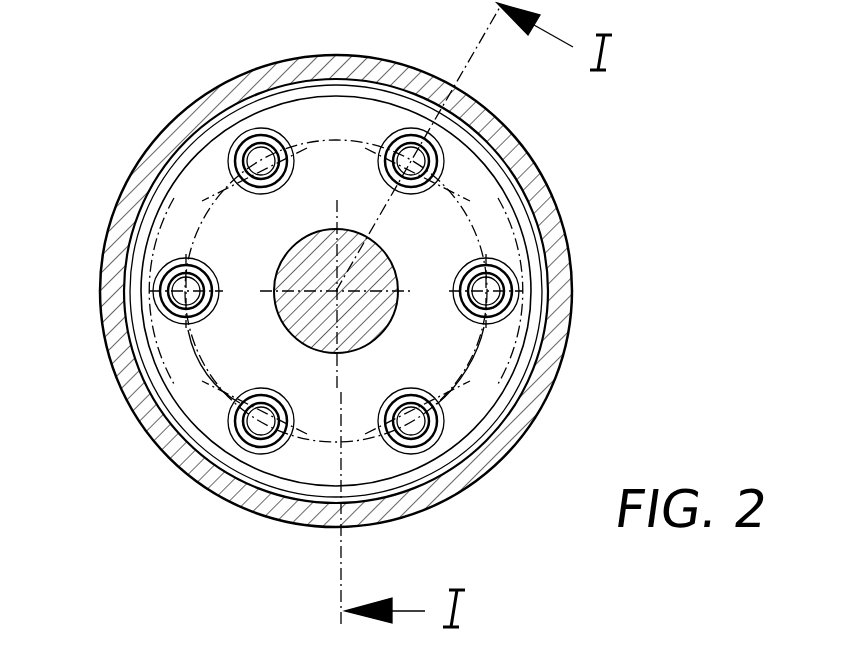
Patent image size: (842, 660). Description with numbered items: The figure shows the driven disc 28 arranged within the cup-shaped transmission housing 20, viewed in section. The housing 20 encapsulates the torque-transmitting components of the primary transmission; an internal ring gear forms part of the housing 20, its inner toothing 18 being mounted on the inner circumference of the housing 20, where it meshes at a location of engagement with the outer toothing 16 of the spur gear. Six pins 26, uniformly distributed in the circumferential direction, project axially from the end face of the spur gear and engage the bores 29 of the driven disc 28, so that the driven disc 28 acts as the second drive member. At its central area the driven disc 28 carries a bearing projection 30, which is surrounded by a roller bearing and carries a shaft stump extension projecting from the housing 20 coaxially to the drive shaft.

The outer toothing 16 is at (540, 452).
The inner toothing 18 is at (412, 512).
The housing 20 is at (563, 258).
The pins 26 is at (425, 146).
The driven disc 28 is at (403, 245).
The bores 29 is at (382, 178).
The bearing projection 30 is at (290, 332).